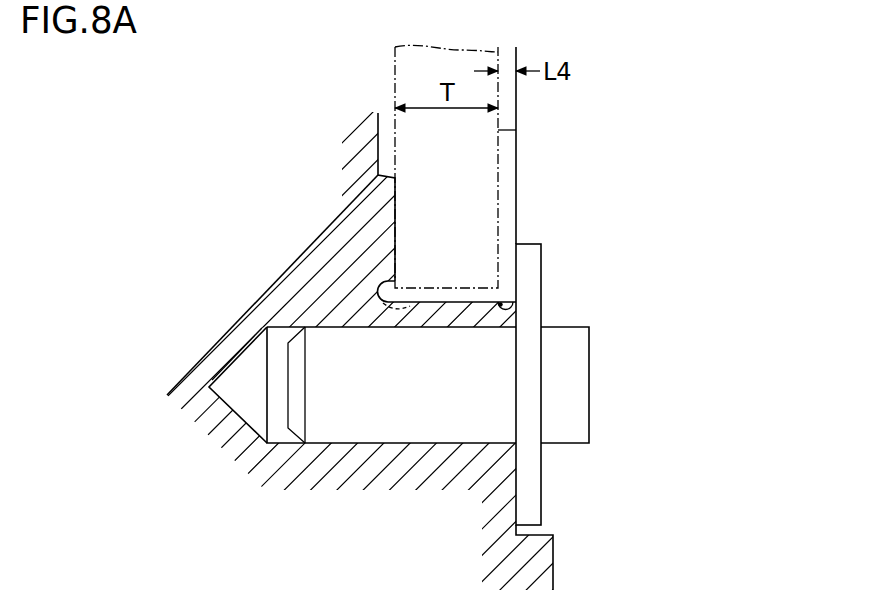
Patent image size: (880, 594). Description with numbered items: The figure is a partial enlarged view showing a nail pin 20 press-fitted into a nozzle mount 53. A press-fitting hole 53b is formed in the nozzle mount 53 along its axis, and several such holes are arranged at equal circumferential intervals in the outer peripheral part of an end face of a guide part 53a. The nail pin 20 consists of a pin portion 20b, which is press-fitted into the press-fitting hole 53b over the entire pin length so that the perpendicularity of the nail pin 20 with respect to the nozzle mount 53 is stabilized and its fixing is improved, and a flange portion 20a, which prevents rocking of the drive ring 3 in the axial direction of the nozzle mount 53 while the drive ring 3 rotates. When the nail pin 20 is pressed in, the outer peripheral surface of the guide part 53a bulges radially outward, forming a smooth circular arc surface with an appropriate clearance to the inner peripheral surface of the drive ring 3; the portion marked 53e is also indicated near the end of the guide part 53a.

The drive ring 3 is at (518, 131).
The nail pin 20 is at (589, 378).
The flange portion 20a is at (541, 486).
The pin portion 20b is at (381, 422).
The nozzle mount 53 is at (302, 208).
The guide part 53a is at (477, 301).
The press-fitting hole 53b is at (280, 403).
The tip end of lip 53e is at (513, 316).